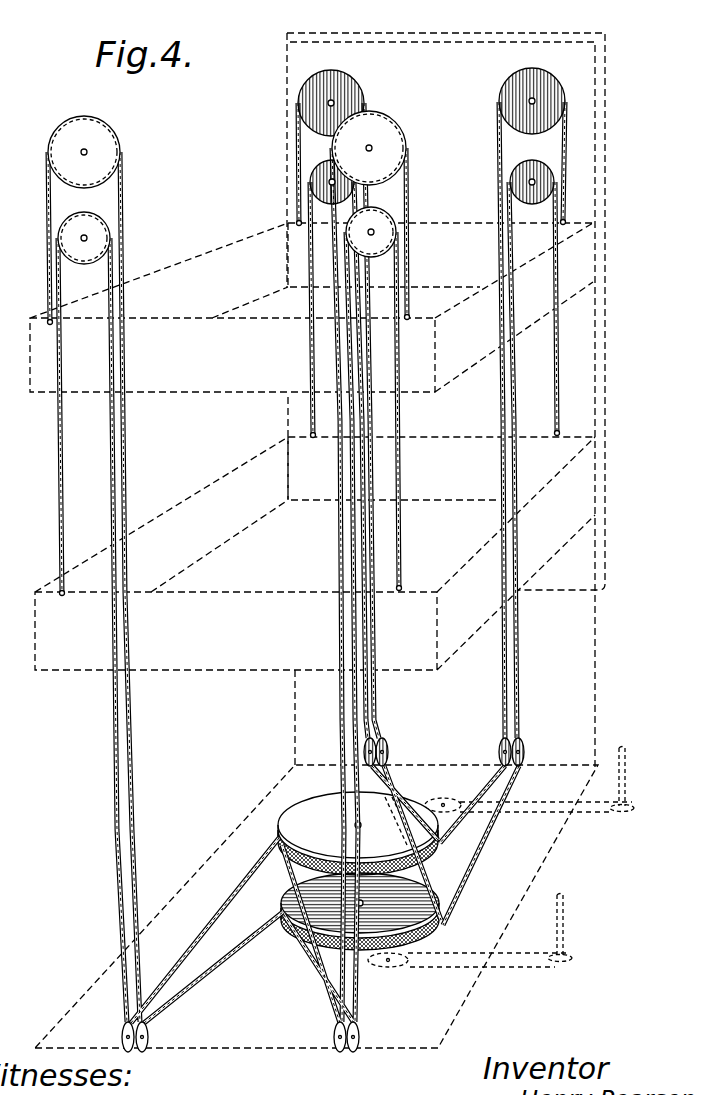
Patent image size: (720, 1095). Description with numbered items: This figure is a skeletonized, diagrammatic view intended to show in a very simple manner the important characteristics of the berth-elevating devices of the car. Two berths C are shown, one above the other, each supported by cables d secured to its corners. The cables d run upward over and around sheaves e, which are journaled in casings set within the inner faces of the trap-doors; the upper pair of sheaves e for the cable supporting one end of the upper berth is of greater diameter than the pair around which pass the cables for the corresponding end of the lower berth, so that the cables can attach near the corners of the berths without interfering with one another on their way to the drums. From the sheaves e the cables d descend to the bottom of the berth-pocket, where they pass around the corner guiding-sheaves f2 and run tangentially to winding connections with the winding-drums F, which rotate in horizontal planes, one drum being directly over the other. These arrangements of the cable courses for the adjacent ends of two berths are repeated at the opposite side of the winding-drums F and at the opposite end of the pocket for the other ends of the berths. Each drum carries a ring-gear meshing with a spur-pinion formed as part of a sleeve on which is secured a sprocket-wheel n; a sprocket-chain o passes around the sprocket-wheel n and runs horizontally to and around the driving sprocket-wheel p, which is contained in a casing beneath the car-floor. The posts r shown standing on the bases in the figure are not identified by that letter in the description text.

The berth C is at (317, 540).
The cable d is at (48, 202).
The sheave e is at (558, 73).
The winding-drum F is at (358, 871).
The corner guiding-sheave f2 is at (378, 740).
The sprocket-wheel n is at (414, 887).
The sprocket-chain o is at (520, 872).
The posts r is at (626, 764).
The driving sprocket-wheel p is at (630, 812).